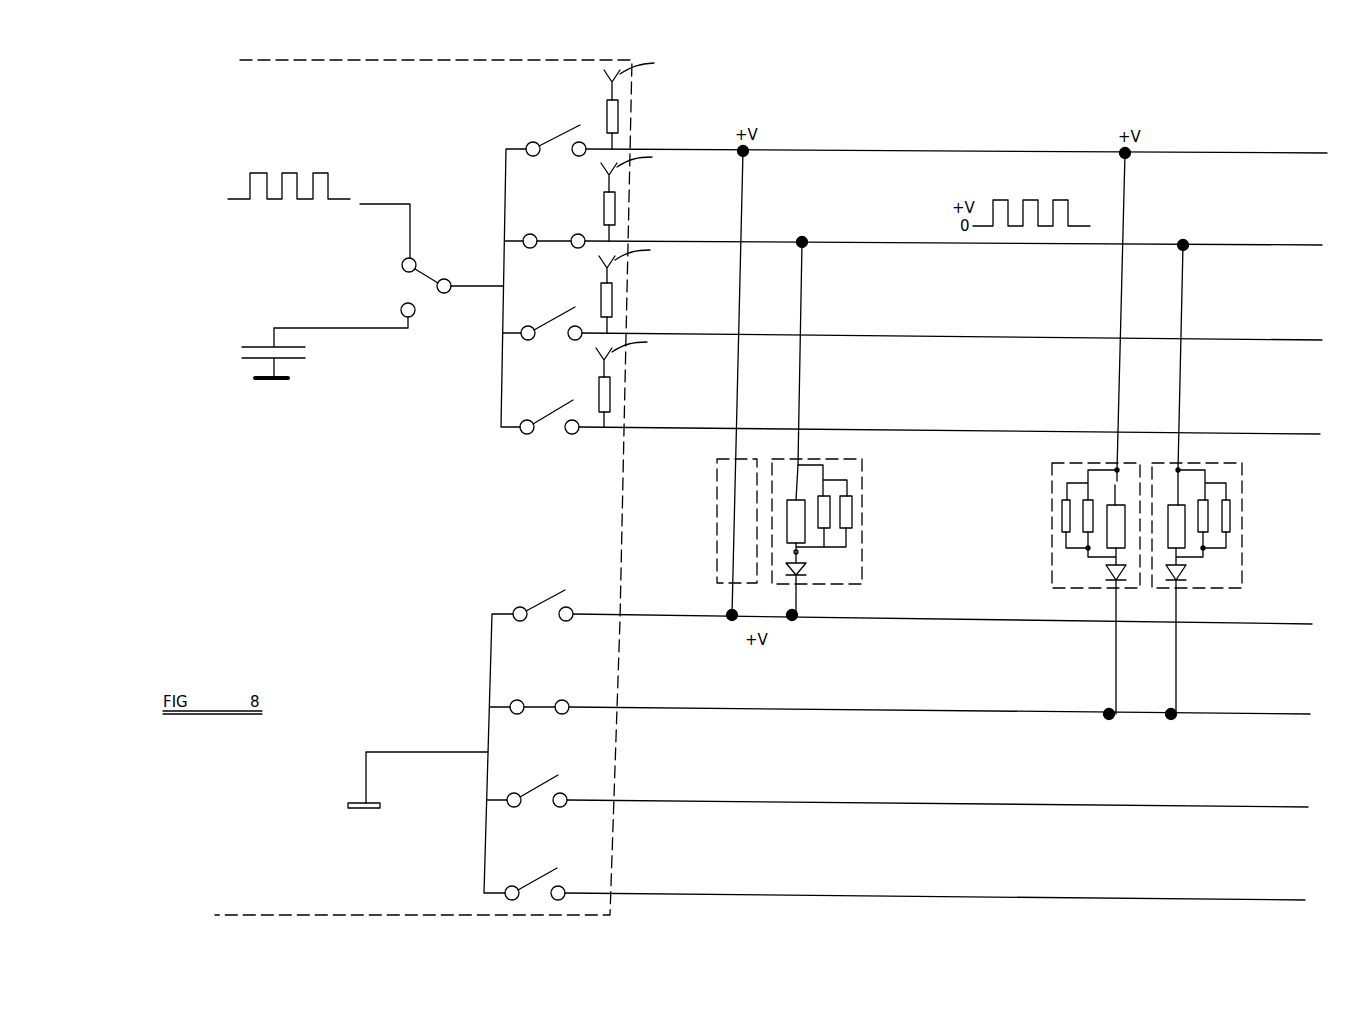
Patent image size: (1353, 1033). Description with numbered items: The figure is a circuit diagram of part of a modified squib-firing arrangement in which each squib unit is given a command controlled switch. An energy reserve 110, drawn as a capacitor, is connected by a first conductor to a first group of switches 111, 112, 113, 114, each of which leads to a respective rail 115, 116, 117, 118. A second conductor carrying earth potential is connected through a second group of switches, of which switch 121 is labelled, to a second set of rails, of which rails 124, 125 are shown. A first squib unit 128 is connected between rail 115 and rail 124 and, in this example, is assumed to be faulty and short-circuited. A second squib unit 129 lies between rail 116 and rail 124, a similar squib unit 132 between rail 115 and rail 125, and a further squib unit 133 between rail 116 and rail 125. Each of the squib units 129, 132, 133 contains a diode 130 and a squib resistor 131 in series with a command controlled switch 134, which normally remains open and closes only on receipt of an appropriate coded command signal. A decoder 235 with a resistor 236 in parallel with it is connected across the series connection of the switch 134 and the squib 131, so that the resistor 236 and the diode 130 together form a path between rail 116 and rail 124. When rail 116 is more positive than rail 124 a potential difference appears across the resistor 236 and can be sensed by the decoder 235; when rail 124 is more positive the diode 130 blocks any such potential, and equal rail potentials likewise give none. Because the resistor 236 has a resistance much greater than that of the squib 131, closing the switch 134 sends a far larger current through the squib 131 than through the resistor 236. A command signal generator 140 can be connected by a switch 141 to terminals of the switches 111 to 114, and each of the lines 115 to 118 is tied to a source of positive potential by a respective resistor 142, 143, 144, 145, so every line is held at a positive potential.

The energy reserve 110 is at (240, 329).
The switch of first group 111 is at (533, 140).
The switch of first group 112 is at (553, 240).
The switch of first group 113 is at (547, 330).
The switch of first group 114 is at (547, 427).
The rail 115 is at (1282, 155).
The rail 116 is at (1268, 247).
The rail 117 is at (1272, 340).
The rail 118 is at (1223, 434).
The switch of second group 121 is at (542, 705).
The rail 124 is at (1230, 621).
The rail 125 is at (1237, 712).
The first squib unit 128 is at (717, 495).
The second squib unit 129 is at (854, 525).
The diode 130 is at (806, 568).
The squib resistor 131 is at (805, 550).
The squib unit 132 is at (1052, 540).
The squib unit 133 is at (1242, 545).
The command controlled switch 134 is at (798, 466).
The command signal generator 140 is at (224, 167).
The switch 141 is at (440, 280).
The resistor 142 is at (618, 118).
The resistor 143 is at (615, 208).
The resistor 144 is at (612, 300).
The resistor 145 is at (610, 394).
The decoder 235 is at (847, 480).
The resistor 236 is at (851, 531).